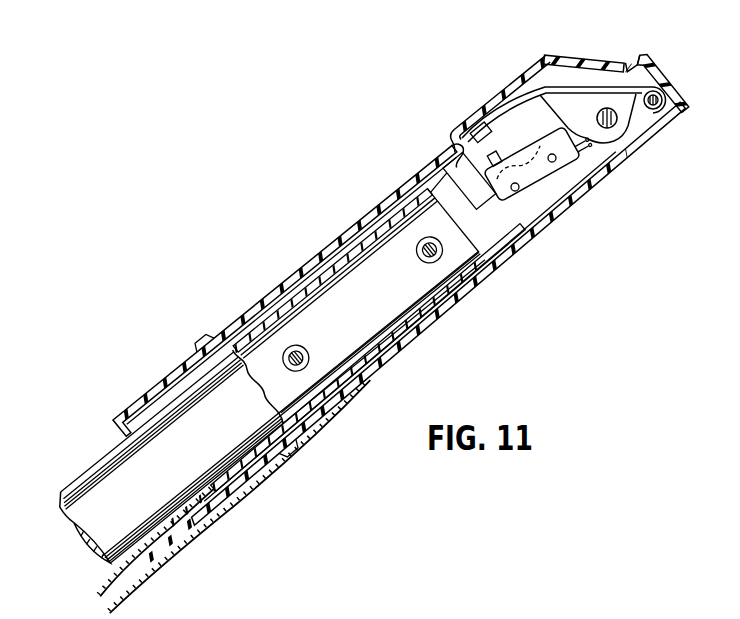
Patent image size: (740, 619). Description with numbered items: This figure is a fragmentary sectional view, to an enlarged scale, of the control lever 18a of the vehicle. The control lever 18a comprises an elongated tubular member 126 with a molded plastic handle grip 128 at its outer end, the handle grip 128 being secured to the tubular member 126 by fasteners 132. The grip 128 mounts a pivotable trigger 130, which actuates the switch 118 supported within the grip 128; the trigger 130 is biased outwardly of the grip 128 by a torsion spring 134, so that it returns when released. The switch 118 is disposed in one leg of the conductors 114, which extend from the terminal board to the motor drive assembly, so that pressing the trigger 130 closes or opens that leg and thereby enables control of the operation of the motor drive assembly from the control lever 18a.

The control lever 18a is at (70, 469).
The conductors 114 is at (522, 212).
The switch 118 is at (605, 162).
The elongated tubular member 126 is at (83, 512).
The molded plastic handle grip 128 is at (318, 260).
The pivotable trigger 130 is at (485, 88).
The fasteners 132 is at (423, 246).
The torsion spring 134 is at (592, 86).